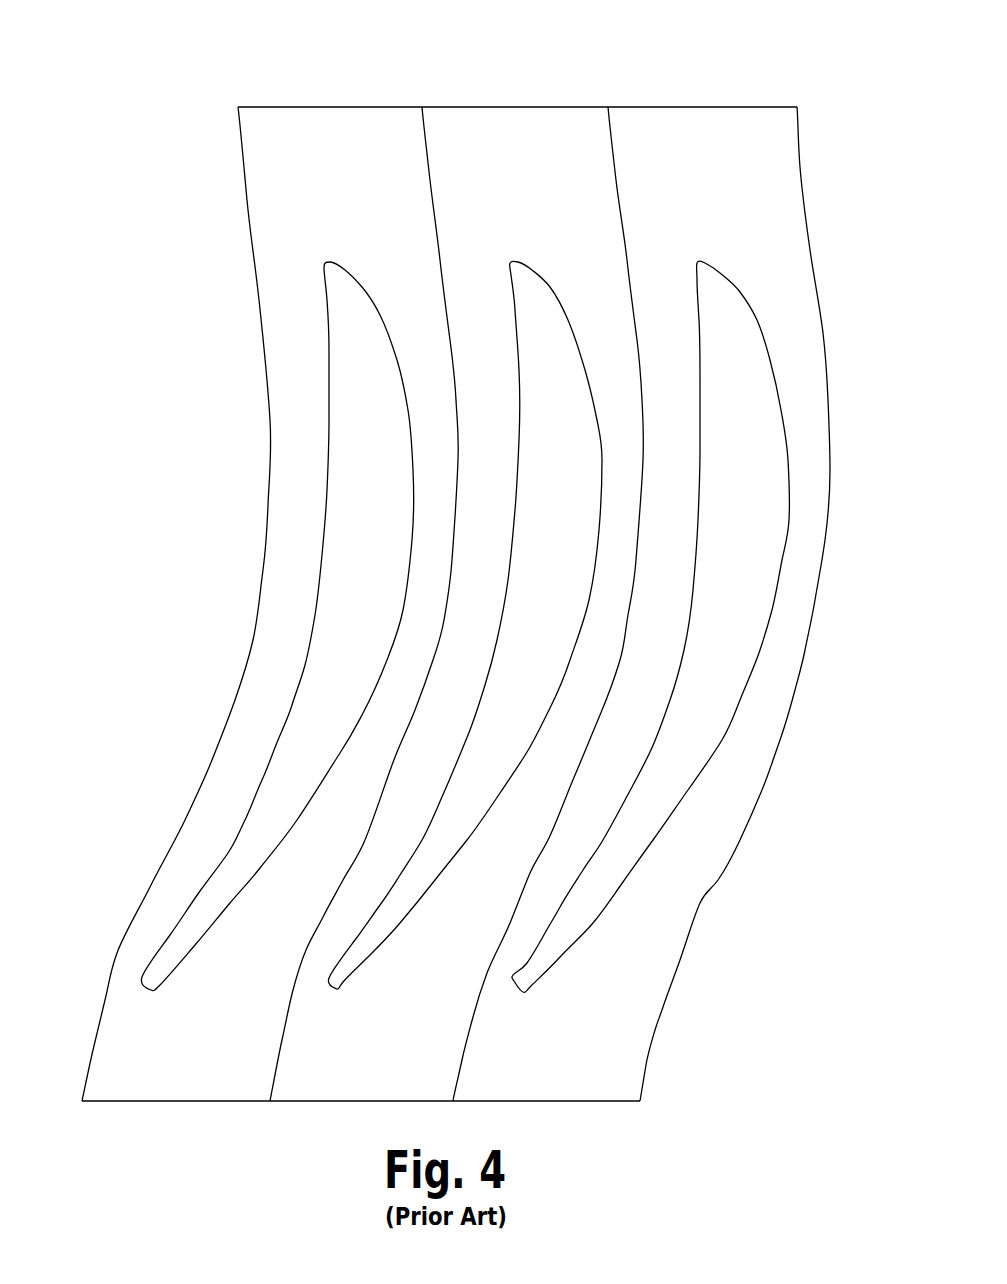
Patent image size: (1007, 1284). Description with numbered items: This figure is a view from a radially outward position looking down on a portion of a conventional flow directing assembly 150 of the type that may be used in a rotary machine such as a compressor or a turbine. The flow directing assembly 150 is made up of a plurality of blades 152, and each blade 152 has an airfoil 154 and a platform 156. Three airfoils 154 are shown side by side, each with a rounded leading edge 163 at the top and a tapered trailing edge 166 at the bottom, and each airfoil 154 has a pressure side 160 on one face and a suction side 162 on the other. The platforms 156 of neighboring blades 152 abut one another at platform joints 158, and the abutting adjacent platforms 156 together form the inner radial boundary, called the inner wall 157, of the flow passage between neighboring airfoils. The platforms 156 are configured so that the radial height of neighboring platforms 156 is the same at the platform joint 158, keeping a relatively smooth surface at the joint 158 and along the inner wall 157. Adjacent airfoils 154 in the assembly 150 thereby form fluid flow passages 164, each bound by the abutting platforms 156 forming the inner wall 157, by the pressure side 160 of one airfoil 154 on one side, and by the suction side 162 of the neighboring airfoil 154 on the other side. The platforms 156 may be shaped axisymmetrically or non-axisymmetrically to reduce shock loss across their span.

The flow directing assembly 150 is at (165, 88).
The blade 152 is at (314, 85).
The airfoil 154 is at (350, 352).
The platform 156 is at (348, 197).
The inner wall 157 is at (490, 460).
The platform joint 158 is at (433, 210).
The pressure side 160 is at (328, 527).
The suction side 162 is at (412, 540).
The leading edge 163 is at (323, 262).
The fluid flow passage 164 is at (473, 369).
The trailing edge 166 is at (148, 983).